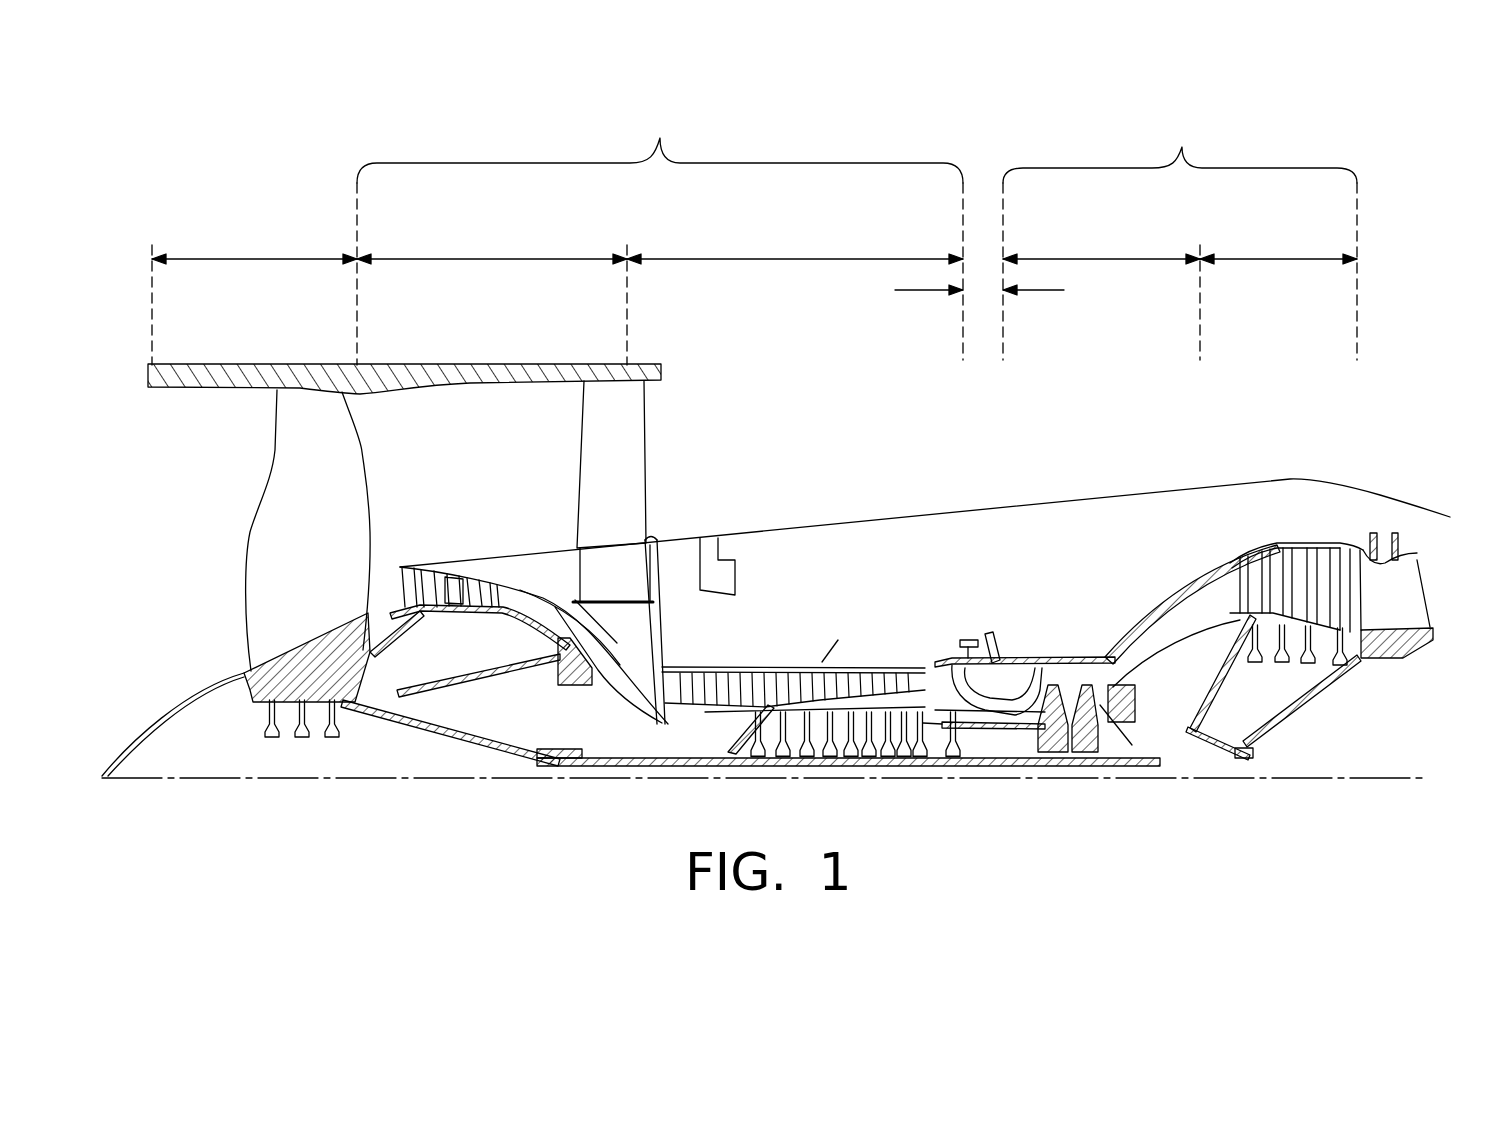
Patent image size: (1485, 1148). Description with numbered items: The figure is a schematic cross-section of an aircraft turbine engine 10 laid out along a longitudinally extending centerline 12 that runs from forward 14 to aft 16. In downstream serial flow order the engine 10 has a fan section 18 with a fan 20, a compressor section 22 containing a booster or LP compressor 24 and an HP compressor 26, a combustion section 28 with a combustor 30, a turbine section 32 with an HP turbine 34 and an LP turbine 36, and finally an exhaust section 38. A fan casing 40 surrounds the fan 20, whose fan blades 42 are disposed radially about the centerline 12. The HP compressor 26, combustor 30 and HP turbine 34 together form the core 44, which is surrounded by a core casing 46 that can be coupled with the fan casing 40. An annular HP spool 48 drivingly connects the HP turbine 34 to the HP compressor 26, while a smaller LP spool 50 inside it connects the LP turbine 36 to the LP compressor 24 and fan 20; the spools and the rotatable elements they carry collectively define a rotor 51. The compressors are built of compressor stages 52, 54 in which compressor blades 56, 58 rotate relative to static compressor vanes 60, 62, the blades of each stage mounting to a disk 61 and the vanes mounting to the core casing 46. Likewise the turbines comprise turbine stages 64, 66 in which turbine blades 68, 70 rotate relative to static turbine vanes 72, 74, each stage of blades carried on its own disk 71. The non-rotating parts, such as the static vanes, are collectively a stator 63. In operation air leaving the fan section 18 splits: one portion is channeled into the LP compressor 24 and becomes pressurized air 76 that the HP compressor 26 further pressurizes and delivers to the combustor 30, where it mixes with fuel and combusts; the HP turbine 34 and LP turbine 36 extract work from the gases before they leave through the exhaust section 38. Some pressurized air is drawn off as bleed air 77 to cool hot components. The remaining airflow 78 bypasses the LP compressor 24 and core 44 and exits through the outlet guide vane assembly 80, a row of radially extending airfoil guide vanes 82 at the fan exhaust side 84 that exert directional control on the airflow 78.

The engine 10 is at (1375, 287).
The centerline 12 is at (233, 779).
The forward 14 is at (152, 501).
The aft 16 is at (1427, 598).
The fan section 18 is at (257, 258).
The fan 20 is at (226, 625).
The compressor section 22 is at (660, 138).
The LP compressor 24 is at (497, 258).
The HP compressor 26 is at (797, 258).
The combustion section 28 is at (905, 291).
The combustor 30 is at (993, 663).
The turbine section 32 is at (1182, 147).
The HP turbine 34 is at (1103, 258).
The LP turbine 36 is at (1277, 258).
The exhaust section 38 is at (1425, 571).
The fan casing 40 is at (389, 365).
The fan blades 42 is at (325, 434).
The core 44 is at (924, 548).
The core casing 46 is at (1188, 583).
The HP spool 48 is at (988, 733).
The LP spool 50 is at (560, 760).
The rotor 51 is at (825, 772).
The compressor stages 52 is at (708, 636).
The compressor stages 54 is at (811, 657).
The compressor blades 56 is at (434, 572).
The compressor blades 58 is at (812, 694).
The static compressor vanes 60 is at (418, 566).
The disk 61 is at (450, 612).
The static compressor vanes 62 is at (692, 700).
The stator 63 is at (694, 738).
The turbine stages 64 is at (1070, 651).
The turbine stages 66 is at (1323, 543).
The turbine blades 68 is at (1058, 680).
The turbine blades 70 is at (1340, 548).
The disk 71 is at (1080, 697).
The static turbine vanes 72 is at (1042, 668).
The static turbine vanes 74 is at (1323, 555).
The pressurized air 76 is at (558, 613).
The bleed air 77 is at (822, 640).
The airflow 78 is at (687, 439).
The outlet guide vane assembly 80 is at (657, 503).
The airfoil guide vanes 82 is at (590, 479).
The fan exhaust side 84 is at (663, 418).